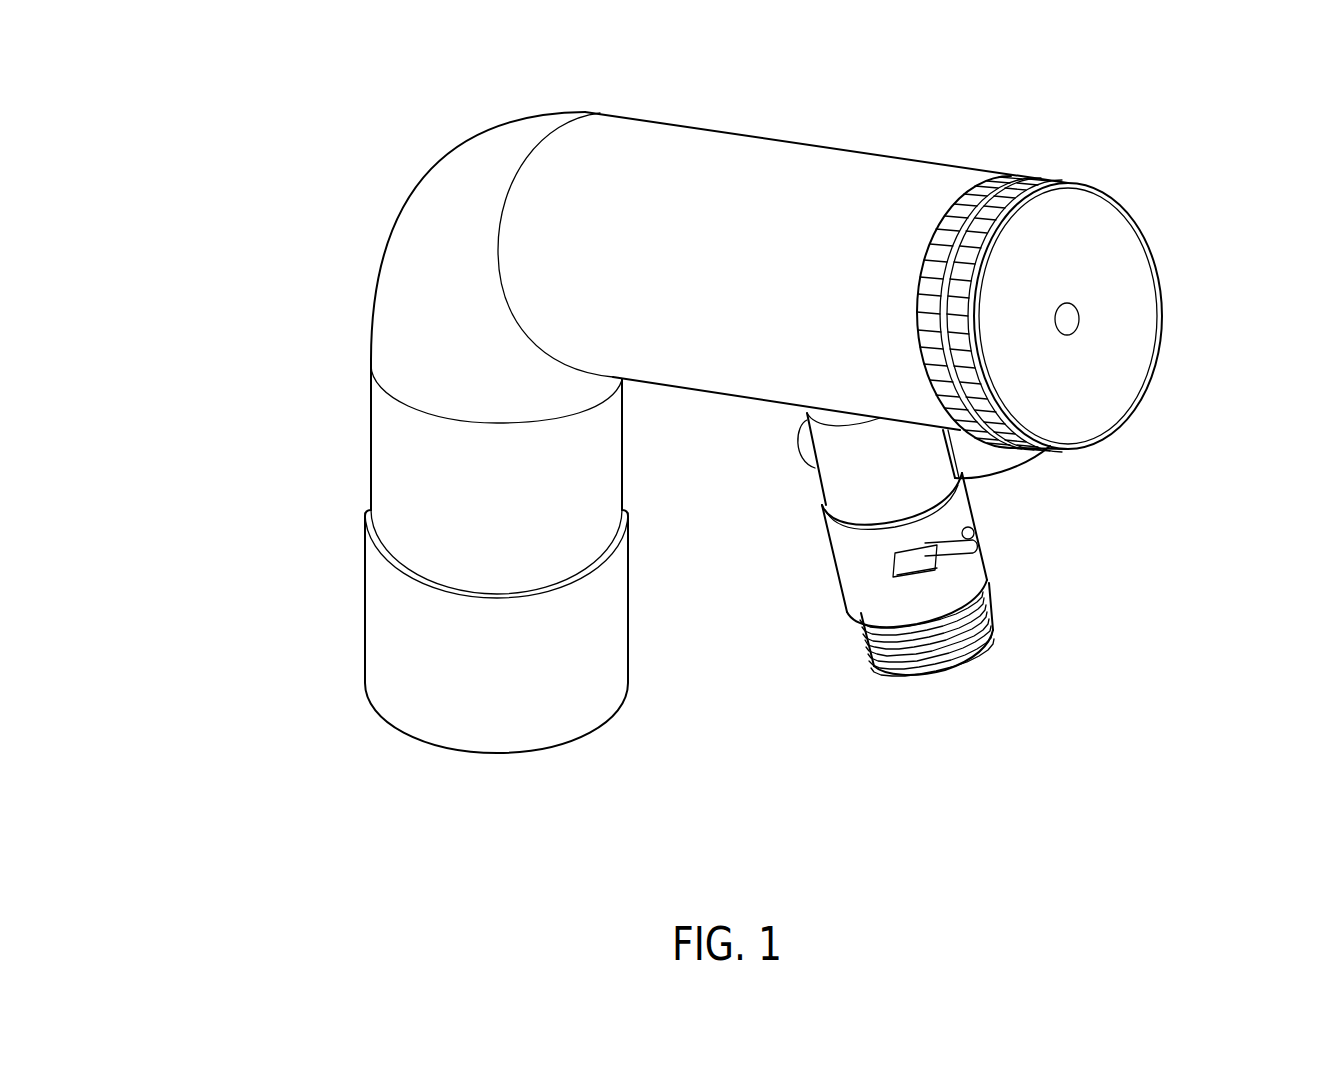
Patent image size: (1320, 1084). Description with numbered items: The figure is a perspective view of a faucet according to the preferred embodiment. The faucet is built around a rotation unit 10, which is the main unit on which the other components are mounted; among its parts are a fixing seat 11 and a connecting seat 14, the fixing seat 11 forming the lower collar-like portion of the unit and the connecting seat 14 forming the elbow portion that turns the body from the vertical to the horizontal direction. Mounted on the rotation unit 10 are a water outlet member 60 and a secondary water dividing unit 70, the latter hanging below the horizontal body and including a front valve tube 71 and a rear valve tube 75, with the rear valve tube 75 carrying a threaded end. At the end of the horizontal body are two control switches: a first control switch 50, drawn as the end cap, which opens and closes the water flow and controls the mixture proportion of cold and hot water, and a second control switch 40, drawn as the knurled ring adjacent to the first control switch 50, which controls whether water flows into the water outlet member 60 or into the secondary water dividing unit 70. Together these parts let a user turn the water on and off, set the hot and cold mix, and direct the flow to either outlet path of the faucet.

The rotation unit 10 is at (363, 410).
The fixing seat 11 is at (365, 597).
The connecting seat 14 is at (383, 248).
The second control switch 40 is at (1032, 172).
The first control switch 50 is at (1153, 225).
The water outlet member 60 is at (1010, 470).
The secondary water dividing unit 70 is at (975, 662).
The front valve tube 71 is at (842, 475).
The rear valve tube 75 is at (855, 577).